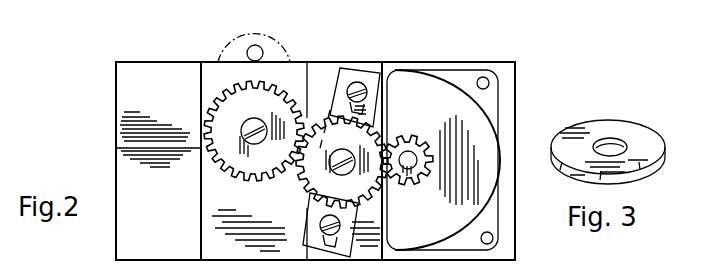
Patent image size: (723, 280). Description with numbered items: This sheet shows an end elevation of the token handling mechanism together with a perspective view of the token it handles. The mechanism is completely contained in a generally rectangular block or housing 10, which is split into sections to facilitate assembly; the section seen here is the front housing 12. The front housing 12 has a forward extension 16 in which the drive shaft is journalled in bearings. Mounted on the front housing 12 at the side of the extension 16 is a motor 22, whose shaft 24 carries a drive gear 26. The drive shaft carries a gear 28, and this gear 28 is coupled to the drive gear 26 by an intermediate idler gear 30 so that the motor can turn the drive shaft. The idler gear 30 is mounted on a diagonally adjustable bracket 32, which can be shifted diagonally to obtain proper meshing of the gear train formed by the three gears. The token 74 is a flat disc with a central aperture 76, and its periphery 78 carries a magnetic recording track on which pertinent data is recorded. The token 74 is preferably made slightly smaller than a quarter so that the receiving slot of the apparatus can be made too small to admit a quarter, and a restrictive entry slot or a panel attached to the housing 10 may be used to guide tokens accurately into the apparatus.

In FIG. 2, the housing 10 is at (123, 62).
In FIG. 2, the front housing 12 is at (515, 70).
In FIG. 2, the forward extension 16 is at (208, 70).
In FIG. 2, the motor 22 is at (442, 90).
In FIG. 2, the shaft 24 is at (410, 178).
In FIG. 2, the drive gear 26 is at (420, 150).
In FIG. 2, the gear 28 is at (227, 157).
In FIG. 2, the intermediate idler gear 30 is at (303, 182).
In FIG. 2, the diagonally adjustable bracket 32 is at (340, 100).
In FIG. 2, the token 74 is at (242, 22).
In FIG. 3, the token 74 is at (593, 130).
In FIG. 3, the central aperture 76 is at (620, 140).
In FIG. 3, the periphery 78 is at (640, 173).